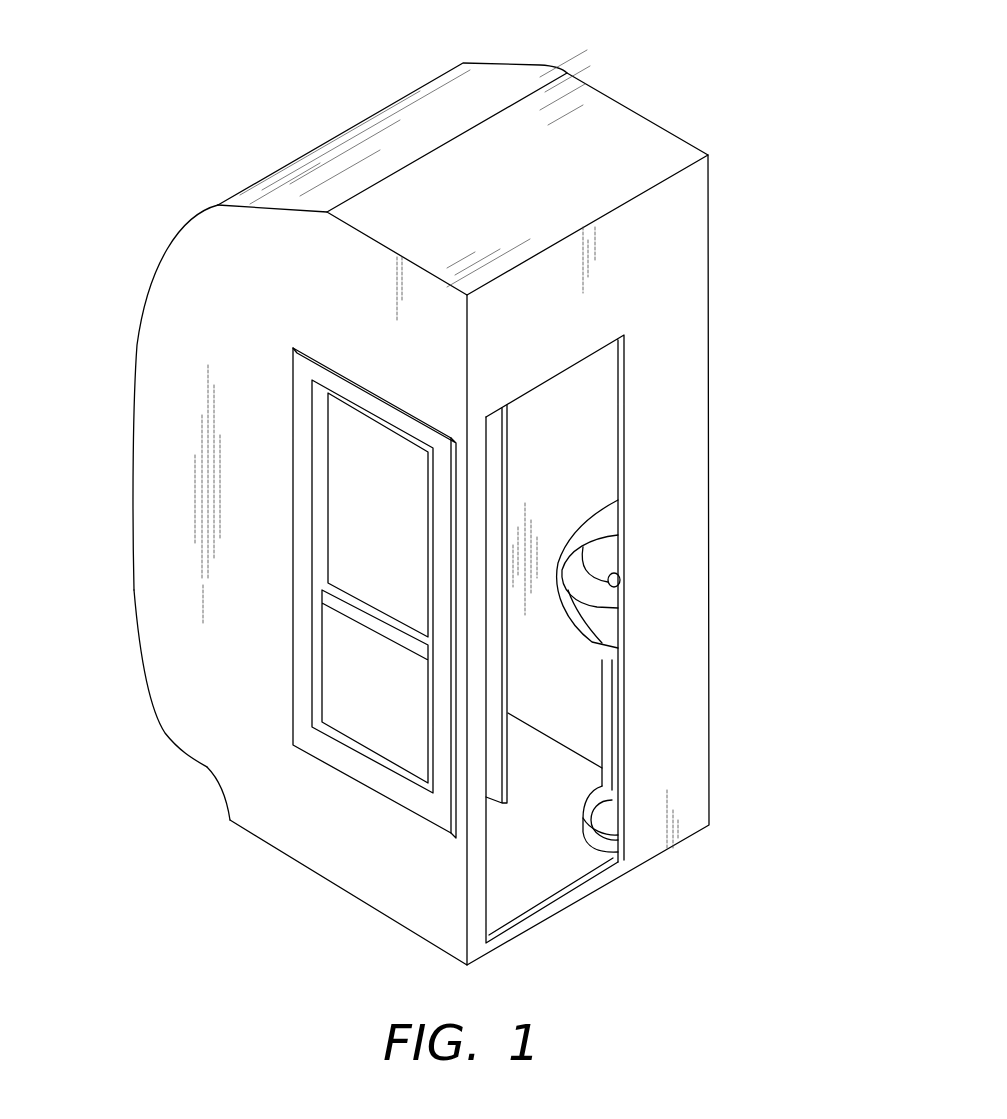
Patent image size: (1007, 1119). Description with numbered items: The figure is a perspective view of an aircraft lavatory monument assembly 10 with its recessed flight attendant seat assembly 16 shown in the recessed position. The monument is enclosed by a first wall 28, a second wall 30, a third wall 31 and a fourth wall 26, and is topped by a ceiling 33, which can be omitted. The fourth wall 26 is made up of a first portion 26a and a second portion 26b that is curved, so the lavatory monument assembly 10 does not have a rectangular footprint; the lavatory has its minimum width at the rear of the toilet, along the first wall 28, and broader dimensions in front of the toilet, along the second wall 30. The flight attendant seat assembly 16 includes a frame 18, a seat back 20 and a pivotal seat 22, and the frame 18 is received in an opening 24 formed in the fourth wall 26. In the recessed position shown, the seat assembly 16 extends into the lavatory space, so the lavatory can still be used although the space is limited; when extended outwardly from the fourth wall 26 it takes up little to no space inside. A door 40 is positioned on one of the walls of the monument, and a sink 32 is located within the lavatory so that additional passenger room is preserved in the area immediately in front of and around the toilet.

The lavatory monument assembly 10 is at (790, 238).
The flight attendant seat assembly 16 is at (243, 493).
The frame 18 is at (370, 402).
The seat back 20 is at (392, 508).
The pivotal seat 22 is at (378, 696).
The opening 24 is at (410, 412).
The fourth wall 26 is at (362, 875).
The first portion 26a is at (258, 810).
The second portion 26b is at (212, 702).
The first wall 28 is at (133, 567).
The second wall 30 is at (680, 558).
The third wall 31 is at (710, 312).
The sink 32 is at (612, 628).
The ceiling 33 is at (613, 118).
The door 40 is at (593, 457).